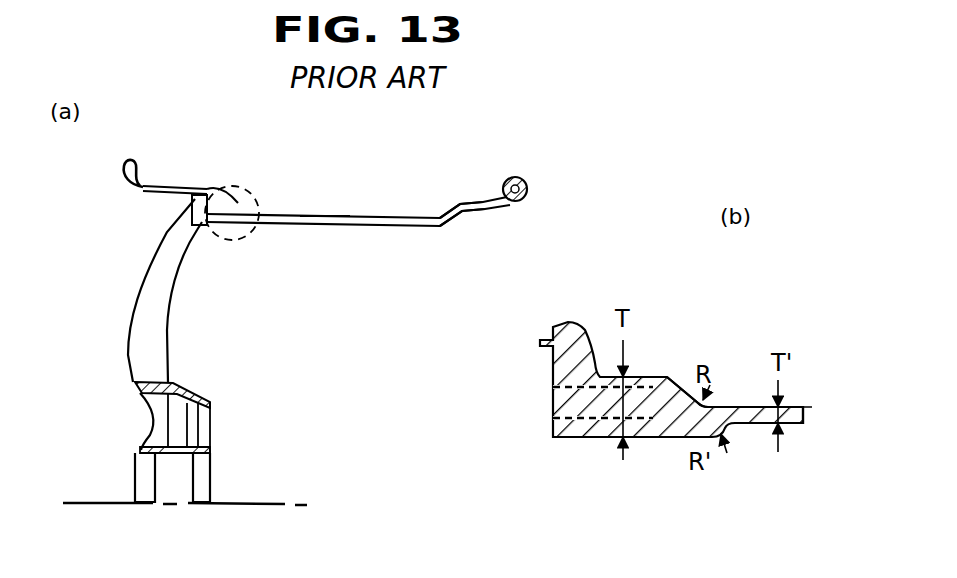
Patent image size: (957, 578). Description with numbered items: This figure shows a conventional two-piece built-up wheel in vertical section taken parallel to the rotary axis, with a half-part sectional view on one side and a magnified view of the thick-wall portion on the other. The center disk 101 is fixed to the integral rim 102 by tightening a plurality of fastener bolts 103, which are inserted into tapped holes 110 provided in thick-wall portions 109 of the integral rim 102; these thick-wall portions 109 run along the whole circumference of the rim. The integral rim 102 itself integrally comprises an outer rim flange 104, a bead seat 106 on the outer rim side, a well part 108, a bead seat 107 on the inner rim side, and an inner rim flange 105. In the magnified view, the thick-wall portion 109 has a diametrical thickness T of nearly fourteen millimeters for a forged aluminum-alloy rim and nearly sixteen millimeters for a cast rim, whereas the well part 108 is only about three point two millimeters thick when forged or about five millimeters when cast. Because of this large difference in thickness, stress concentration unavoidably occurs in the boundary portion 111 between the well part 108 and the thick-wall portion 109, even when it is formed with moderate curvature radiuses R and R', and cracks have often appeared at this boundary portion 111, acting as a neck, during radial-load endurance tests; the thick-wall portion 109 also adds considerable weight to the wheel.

The center disk 101 is at (143, 310).
The integral rim 102 is at (360, 236).
The fastener bolt 103 is at (185, 220).
The outer rim flange 104 is at (118, 177).
The inner rim flange 105 is at (532, 192).
The bead seat on outer rim side 106 is at (153, 183).
The bead seat on inner rim side 107 is at (483, 198).
The well part 108 is at (325, 217).
The thick-wall portion 109 is at (243, 185).
The tapped hole 110 is at (553, 402).
The boundary portion 111 is at (740, 402).